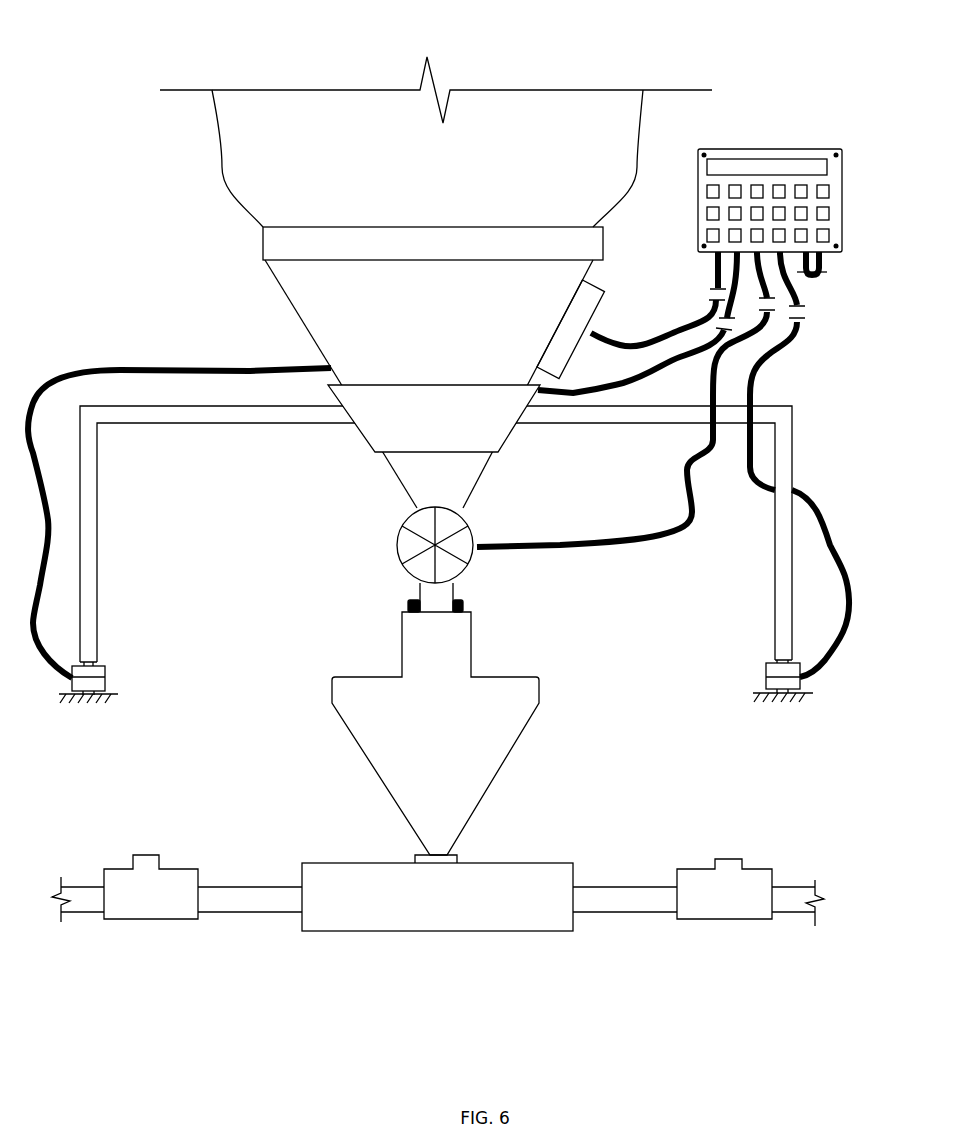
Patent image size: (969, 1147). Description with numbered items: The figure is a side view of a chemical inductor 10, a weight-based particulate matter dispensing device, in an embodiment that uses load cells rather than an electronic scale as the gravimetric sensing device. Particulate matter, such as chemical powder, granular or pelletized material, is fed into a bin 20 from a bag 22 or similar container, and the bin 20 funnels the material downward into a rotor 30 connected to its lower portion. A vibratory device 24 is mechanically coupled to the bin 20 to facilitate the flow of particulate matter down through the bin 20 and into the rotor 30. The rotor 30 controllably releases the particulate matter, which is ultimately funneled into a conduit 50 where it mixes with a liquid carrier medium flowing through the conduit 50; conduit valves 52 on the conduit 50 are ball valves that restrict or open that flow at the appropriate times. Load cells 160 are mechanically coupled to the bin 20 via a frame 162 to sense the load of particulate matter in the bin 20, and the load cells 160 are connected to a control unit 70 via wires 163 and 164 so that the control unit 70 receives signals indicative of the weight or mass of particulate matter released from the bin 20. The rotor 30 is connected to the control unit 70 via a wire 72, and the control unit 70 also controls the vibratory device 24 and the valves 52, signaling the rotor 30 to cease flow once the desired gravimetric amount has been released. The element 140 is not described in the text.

The chemical inductor 10 is at (124, 49).
The bag 22 is at (262, 164).
The bin 20 is at (344, 333).
The vibratory device 24 is at (595, 303).
The control unit 70 is at (800, 145).
The wire 72 is at (686, 498).
The rotor 30 is at (394, 547).
The dispenser body 140 is at (546, 687).
The load cells 160 is at (107, 667).
The frame 162 is at (218, 418).
The wire 163 is at (122, 364).
The wire 164 is at (824, 520).
The conduit 50 is at (371, 940).
The conduit valve 52 is at (127, 885).